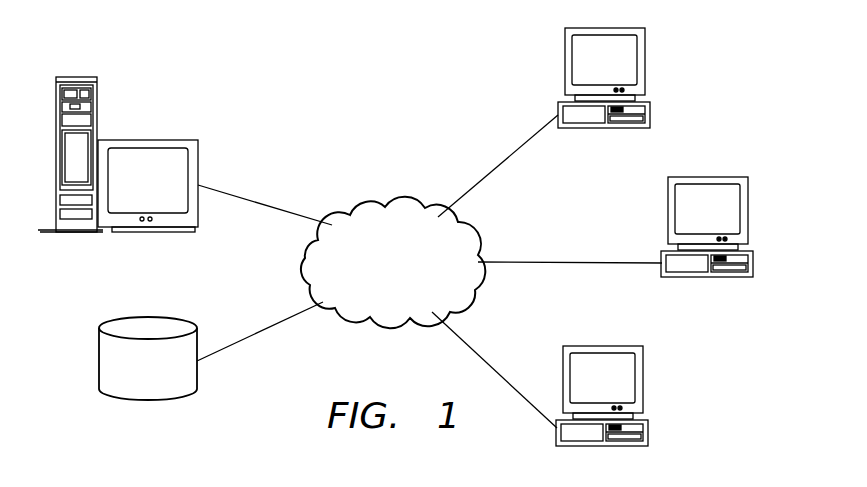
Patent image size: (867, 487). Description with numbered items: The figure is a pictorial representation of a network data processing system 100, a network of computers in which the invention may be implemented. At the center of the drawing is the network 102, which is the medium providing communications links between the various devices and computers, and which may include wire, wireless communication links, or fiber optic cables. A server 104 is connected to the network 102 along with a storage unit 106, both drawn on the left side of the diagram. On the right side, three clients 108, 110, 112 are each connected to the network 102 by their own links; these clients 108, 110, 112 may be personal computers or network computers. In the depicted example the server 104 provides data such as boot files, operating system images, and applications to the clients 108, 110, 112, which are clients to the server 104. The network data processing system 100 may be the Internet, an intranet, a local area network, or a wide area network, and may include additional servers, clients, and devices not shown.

The network data processing system 100 is at (276, 66).
The network 102 is at (412, 288).
The server 104 is at (97, 98).
The storage unit 106 is at (97, 360).
The client 108 is at (643, 70).
The client 110 is at (748, 216).
The client 112 is at (643, 385).